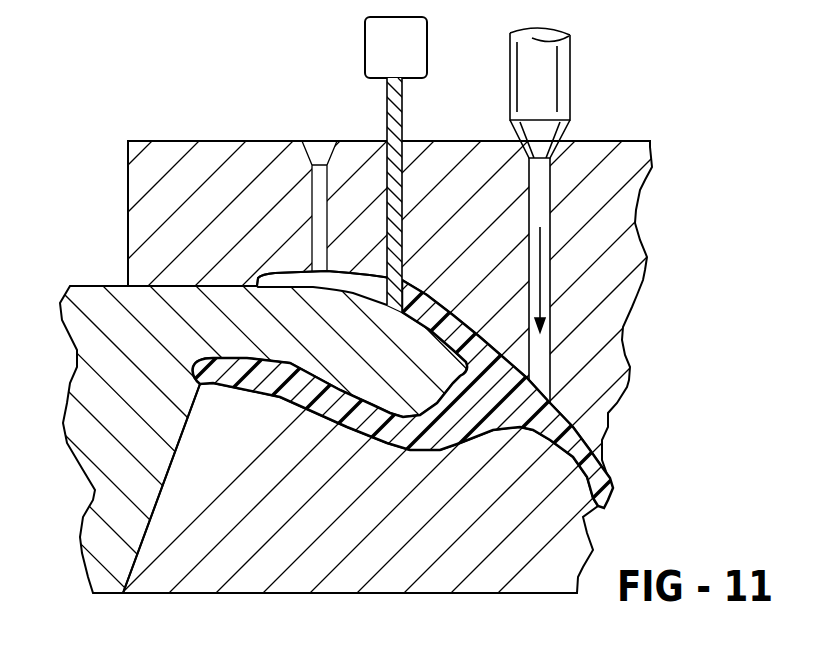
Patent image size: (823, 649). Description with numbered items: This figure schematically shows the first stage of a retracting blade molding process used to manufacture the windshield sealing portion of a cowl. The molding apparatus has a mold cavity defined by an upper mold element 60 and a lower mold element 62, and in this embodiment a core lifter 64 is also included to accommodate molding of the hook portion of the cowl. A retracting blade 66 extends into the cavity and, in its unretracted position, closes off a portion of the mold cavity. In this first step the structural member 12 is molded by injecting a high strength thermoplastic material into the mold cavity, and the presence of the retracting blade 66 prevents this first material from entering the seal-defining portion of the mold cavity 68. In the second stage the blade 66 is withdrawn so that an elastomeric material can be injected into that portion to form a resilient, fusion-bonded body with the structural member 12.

The structural member 12 is at (580, 440).
The upper mold element 60 is at (588, 153).
The lower mold element 62 is at (487, 578).
The core lifter 64 is at (88, 435).
The retracting blade 66 is at (388, 100).
The seal-defining portion of the mold cavity 68 is at (353, 290).